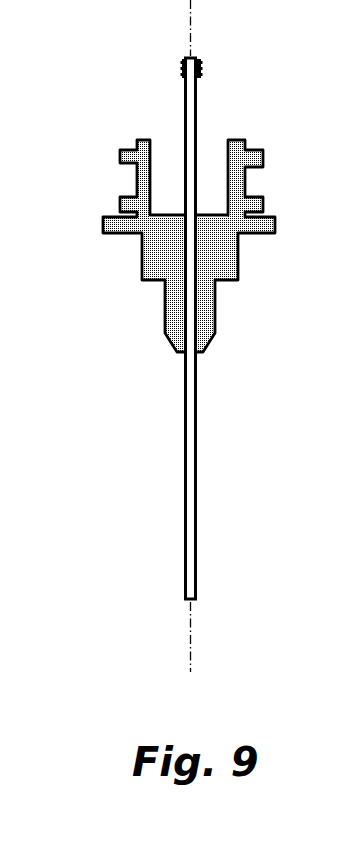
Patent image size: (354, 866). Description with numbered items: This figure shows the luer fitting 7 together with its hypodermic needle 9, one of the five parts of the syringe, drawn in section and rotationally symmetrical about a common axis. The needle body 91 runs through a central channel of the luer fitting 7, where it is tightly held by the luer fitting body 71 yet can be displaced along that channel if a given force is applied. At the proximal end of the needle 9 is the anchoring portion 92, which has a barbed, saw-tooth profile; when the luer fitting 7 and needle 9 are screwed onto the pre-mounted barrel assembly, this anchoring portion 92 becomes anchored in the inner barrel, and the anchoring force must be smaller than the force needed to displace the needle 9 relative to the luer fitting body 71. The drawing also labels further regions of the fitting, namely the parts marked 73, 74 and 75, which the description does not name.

The luer fitting 7 is at (198, 286).
The hypodermic needle 9 is at (198, 325).
The luer fitting body 71 is at (218, 262).
The hub cylindrical wall 73 is at (245, 140).
The engagement projections 74 is at (258, 155).
The hub tip portion 75 is at (205, 327).
The needle body 91 is at (196, 528).
The anchoring portion 92 is at (201, 62).